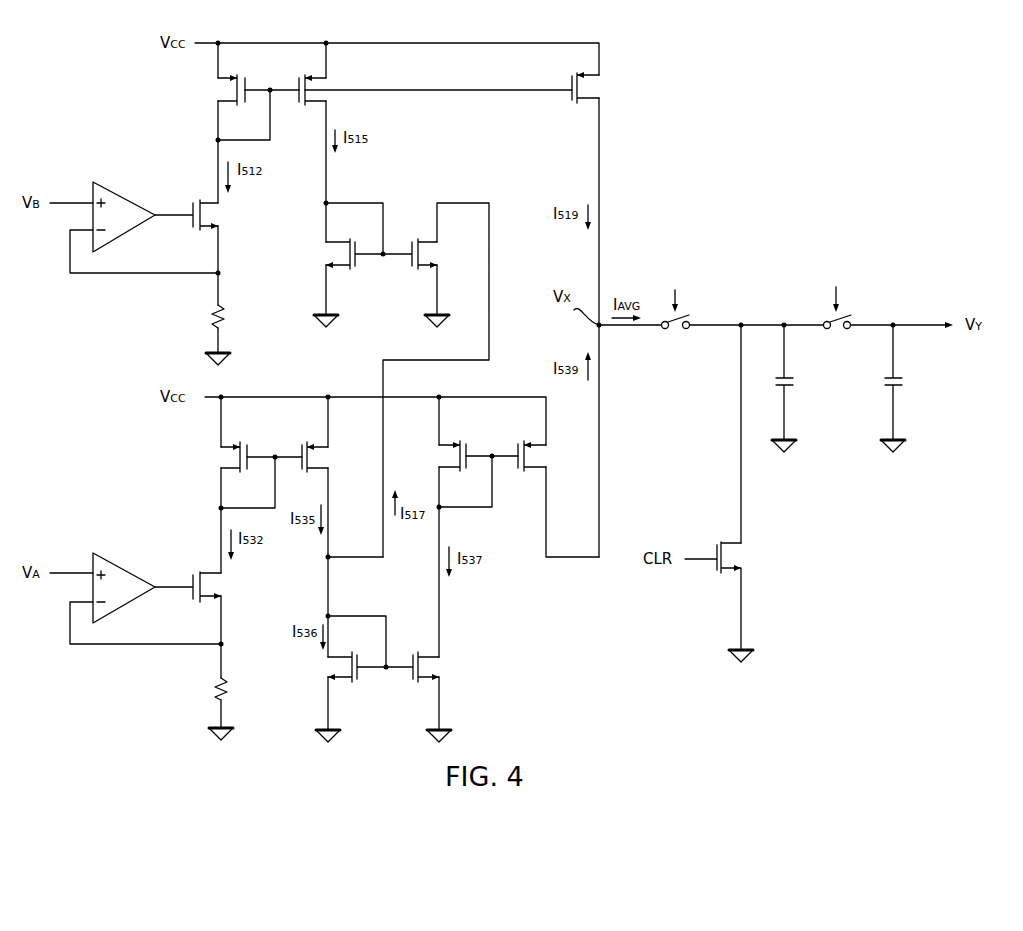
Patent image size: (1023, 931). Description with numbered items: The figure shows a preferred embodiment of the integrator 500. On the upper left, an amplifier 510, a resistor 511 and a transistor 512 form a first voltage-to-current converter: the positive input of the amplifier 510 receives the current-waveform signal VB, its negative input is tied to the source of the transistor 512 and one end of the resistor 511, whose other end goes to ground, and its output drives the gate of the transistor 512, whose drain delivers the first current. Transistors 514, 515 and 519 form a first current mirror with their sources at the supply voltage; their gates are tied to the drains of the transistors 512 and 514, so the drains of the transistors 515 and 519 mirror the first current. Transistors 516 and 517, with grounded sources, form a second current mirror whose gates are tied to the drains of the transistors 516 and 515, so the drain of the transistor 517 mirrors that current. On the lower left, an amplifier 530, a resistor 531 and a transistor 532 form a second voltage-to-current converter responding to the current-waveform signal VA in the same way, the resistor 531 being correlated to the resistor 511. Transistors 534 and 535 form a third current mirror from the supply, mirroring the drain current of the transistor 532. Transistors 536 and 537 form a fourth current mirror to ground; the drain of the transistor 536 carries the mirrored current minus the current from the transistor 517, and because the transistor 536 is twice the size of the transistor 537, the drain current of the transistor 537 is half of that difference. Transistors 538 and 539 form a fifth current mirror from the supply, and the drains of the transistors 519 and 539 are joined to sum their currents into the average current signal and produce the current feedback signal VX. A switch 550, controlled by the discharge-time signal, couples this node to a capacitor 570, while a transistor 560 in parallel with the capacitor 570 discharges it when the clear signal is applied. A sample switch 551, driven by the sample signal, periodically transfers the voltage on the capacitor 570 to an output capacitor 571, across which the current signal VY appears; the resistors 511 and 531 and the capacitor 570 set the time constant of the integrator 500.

The integrator 500 is at (960, 58).
The amplifier 510 is at (134, 224).
The resistor 511 is at (235, 316).
The transistor 512 is at (186, 189).
The transistor 514 is at (214, 90).
The transistor 515 is at (331, 86).
The transistor 516 is at (337, 254).
The transistor 517 is at (428, 254).
The transistor 519 is at (602, 87).
The amplifier 530 is at (135, 595).
The resistor 531 is at (238, 689).
The transistor 532 is at (206, 587).
The transistor 534 is at (216, 457).
The transistor 535 is at (332, 457).
The transistor 536 is at (339, 667).
The transistor 537 is at (432, 667).
The transistor 538 is at (435, 456).
The transistor 539 is at (548, 456).
The switch 550 is at (670, 312).
The sample switch 551 is at (817, 310).
The transistor 560 is at (732, 602).
The capacitor 570 is at (800, 388).
The output capacitor 571 is at (911, 388).